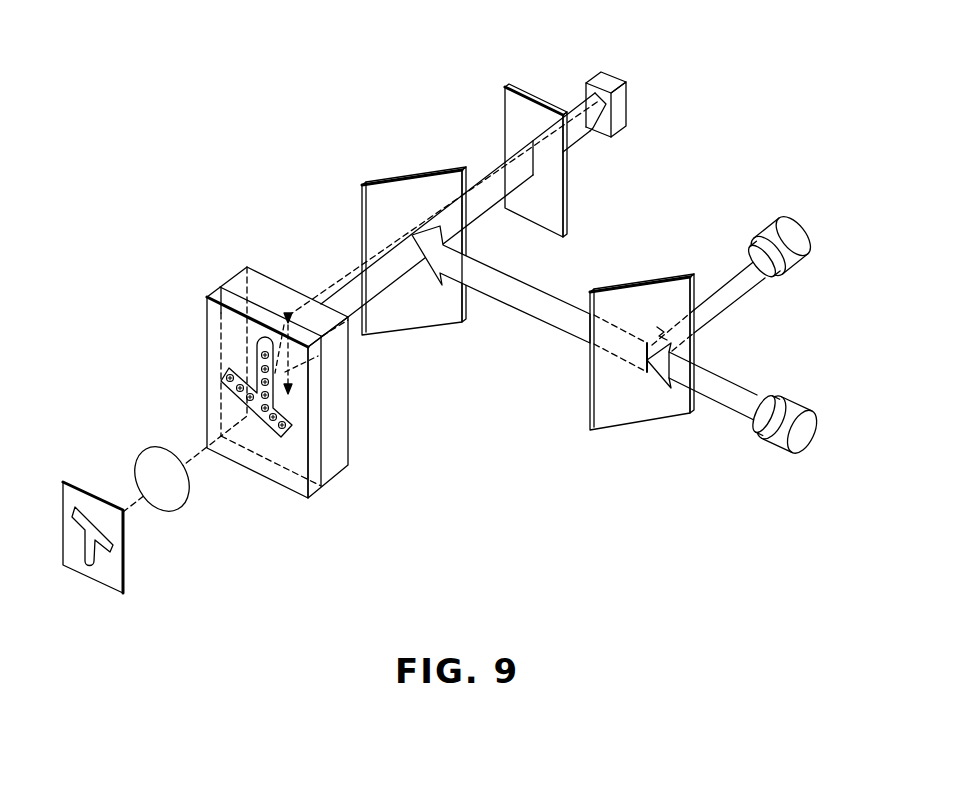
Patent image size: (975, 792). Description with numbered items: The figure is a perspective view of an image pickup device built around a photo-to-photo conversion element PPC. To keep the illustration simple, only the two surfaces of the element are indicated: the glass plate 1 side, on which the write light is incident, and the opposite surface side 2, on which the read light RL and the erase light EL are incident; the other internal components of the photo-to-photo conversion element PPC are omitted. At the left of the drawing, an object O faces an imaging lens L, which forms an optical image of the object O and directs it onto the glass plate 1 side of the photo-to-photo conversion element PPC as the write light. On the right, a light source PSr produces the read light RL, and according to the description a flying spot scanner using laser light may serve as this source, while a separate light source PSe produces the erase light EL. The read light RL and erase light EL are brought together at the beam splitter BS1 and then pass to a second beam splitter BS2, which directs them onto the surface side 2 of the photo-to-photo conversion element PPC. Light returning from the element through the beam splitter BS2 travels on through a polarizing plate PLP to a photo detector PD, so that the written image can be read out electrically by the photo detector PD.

The photo-to-photo conversion element PPC is at (251, 323).
The glass plate 1 is at (211, 318).
The glass plate surface side 2 is at (265, 273).
The beam splitter BS2 is at (397, 188).
The beam splitter BS1 is at (650, 297).
The polarizing plate PLP is at (513, 103).
The photo detector PD is at (602, 78).
The erase light EL is at (735, 260).
The read light RL is at (722, 405).
The light source for the erase light PSe is at (788, 253).
The light source for the read light PSr is at (779, 438).
The imaging lens L is at (180, 505).
The object O is at (120, 572).